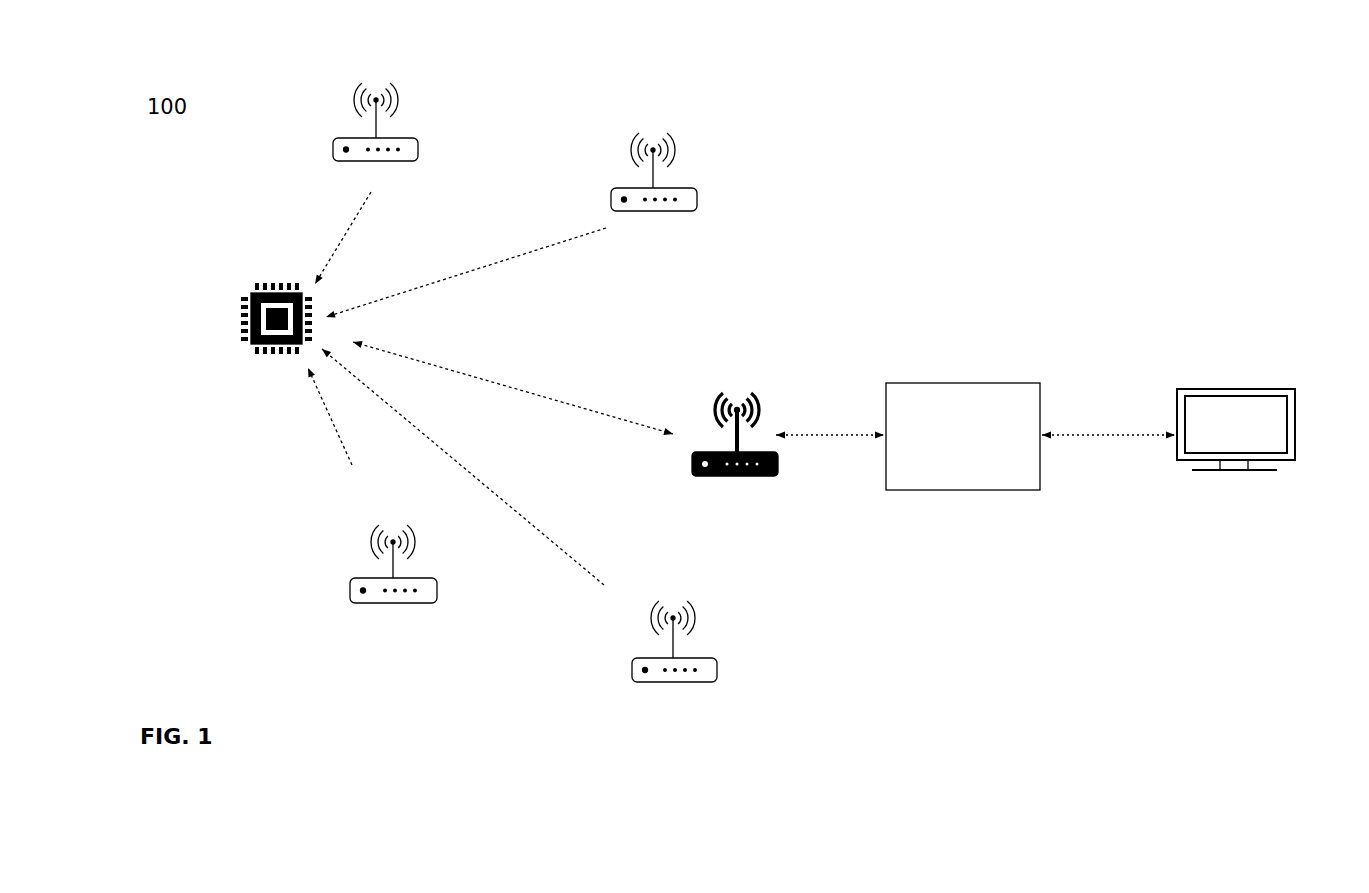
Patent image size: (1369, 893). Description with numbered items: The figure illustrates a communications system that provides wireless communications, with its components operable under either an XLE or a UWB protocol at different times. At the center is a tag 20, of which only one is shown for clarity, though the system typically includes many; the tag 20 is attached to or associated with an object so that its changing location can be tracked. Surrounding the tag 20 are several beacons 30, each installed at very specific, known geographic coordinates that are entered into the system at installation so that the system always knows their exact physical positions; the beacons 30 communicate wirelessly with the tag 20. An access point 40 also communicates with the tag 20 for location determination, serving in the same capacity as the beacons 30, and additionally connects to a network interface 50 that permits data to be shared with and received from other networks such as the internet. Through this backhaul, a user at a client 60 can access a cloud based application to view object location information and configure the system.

The tag 20 is at (257, 348).
The beacon 30 is at (418, 152).
The access point 40 is at (778, 476).
The network interface 50 is at (1040, 490).
The client 60 is at (1295, 460).